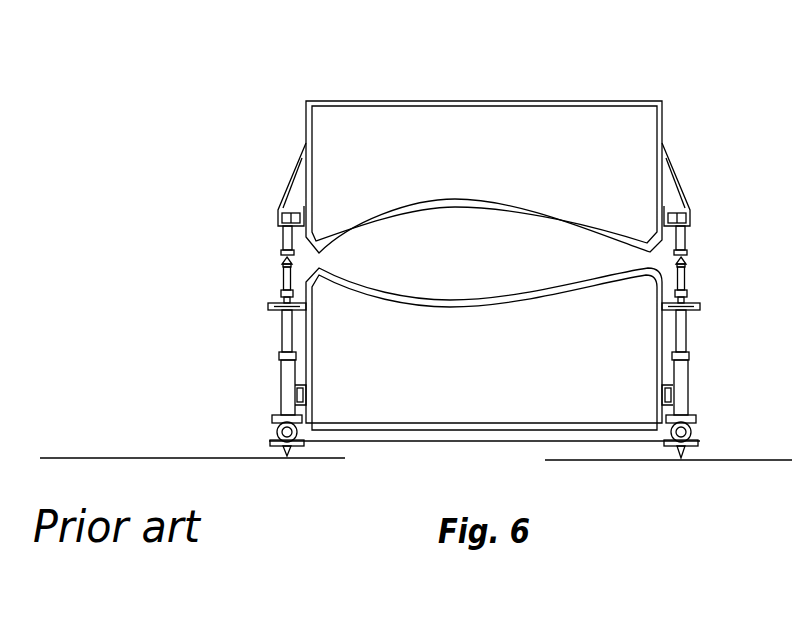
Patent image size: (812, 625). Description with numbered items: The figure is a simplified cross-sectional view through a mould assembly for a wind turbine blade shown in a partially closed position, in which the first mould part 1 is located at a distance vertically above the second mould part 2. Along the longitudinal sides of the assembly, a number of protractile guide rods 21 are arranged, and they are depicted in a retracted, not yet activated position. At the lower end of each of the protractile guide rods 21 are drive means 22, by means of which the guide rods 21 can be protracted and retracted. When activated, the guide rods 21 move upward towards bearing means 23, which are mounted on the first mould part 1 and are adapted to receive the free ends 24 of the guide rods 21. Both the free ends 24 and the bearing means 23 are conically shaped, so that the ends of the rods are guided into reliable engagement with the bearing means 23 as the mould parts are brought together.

The first mould part 1 is at (503, 116).
The second mould part 2 is at (550, 410).
The protractile guide rod 21 is at (688, 282).
The drive means 22 is at (700, 437).
The bearing means 23 is at (688, 258).
The free end 24 is at (690, 265).